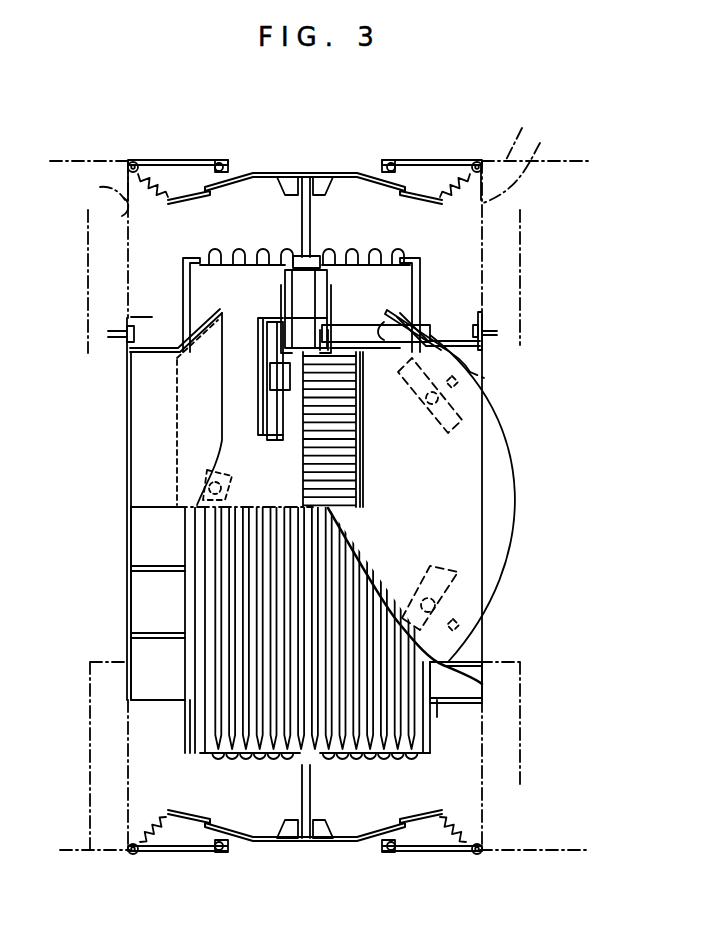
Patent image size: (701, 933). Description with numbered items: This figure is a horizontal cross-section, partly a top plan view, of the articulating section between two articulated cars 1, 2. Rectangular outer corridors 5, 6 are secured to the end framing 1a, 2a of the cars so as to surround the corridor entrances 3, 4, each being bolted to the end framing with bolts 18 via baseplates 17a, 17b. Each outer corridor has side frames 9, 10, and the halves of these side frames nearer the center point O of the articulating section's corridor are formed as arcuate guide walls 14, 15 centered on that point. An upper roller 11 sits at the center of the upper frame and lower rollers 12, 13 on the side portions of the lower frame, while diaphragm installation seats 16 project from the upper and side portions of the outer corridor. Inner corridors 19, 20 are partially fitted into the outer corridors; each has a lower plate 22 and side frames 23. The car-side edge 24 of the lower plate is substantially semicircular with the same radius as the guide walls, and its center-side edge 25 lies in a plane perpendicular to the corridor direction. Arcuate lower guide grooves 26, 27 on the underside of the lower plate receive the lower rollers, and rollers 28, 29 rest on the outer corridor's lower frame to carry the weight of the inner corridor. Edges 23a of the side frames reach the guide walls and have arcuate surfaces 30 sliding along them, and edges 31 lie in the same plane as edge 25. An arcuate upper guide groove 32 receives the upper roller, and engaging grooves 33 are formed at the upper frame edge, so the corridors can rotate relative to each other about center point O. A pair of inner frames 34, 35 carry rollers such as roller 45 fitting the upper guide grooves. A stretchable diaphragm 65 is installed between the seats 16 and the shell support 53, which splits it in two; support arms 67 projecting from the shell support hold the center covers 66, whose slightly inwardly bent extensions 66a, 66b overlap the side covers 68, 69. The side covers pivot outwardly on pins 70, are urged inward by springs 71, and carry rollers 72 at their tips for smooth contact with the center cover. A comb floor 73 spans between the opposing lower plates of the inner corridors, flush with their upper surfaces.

The articulated car 1 is at (531, 113).
The end framing 1a is at (561, 141).
The articulated car 2 is at (113, 170).
The end framing 2a is at (84, 186).
The corridor entrance 3 is at (530, 358).
The corridor entrance 4 is at (88, 360).
The outer corridor 5 is at (483, 318).
The outer corridor 6 is at (128, 395).
The side frame 9 is at (497, 340).
The side frame 10 is at (465, 656).
The upper roller 11 is at (210, 498).
The lower roller 12 is at (440, 412).
The lower roller 13 is at (440, 600).
The arcuate guide wall 14 is at (180, 315).
The arcuate guide wall 15 is at (470, 680).
The diaphragm installation seat 16 is at (188, 280).
The baseplate 17a is at (484, 322).
The baseplate 17b is at (130, 330).
The bolt 18 is at (108, 333).
The inner corridor 19 is at (491, 462).
The inner corridor 20 is at (247, 404).
The lower plate 22 is at (493, 505).
The side frame 23 is at (405, 362).
The edge 23a is at (470, 374).
The edge 24 is at (512, 480).
The edge 25 is at (335, 345).
The lower guide groove 26 is at (462, 432).
The lower guide groove 27 is at (455, 572).
The roller 28 is at (455, 400).
The roller 29 is at (460, 625).
The arcuate surface 30 is at (400, 318).
The edge 31 is at (322, 315).
The upper guide groove 32 is at (215, 485).
The engaging groove 33 is at (262, 340).
The inner frame 34 is at (313, 353).
The inner frame 35 is at (290, 310).
The roller 45 is at (199, 409).
The shell support 53 is at (302, 255).
The stretchable diaphragm 65 is at (240, 760).
The center cover 66 is at (345, 173).
The extension 66a is at (400, 822).
The extension 66b is at (220, 822).
The support arm 67 is at (312, 212).
The side cover 68 is at (415, 160).
The side cover 69 is at (200, 160).
The pin 70 is at (133, 162).
The spring 71 is at (150, 178).
The roller 72 is at (222, 160).
The comb floor 73 is at (365, 465).
The center point O is at (303, 507).